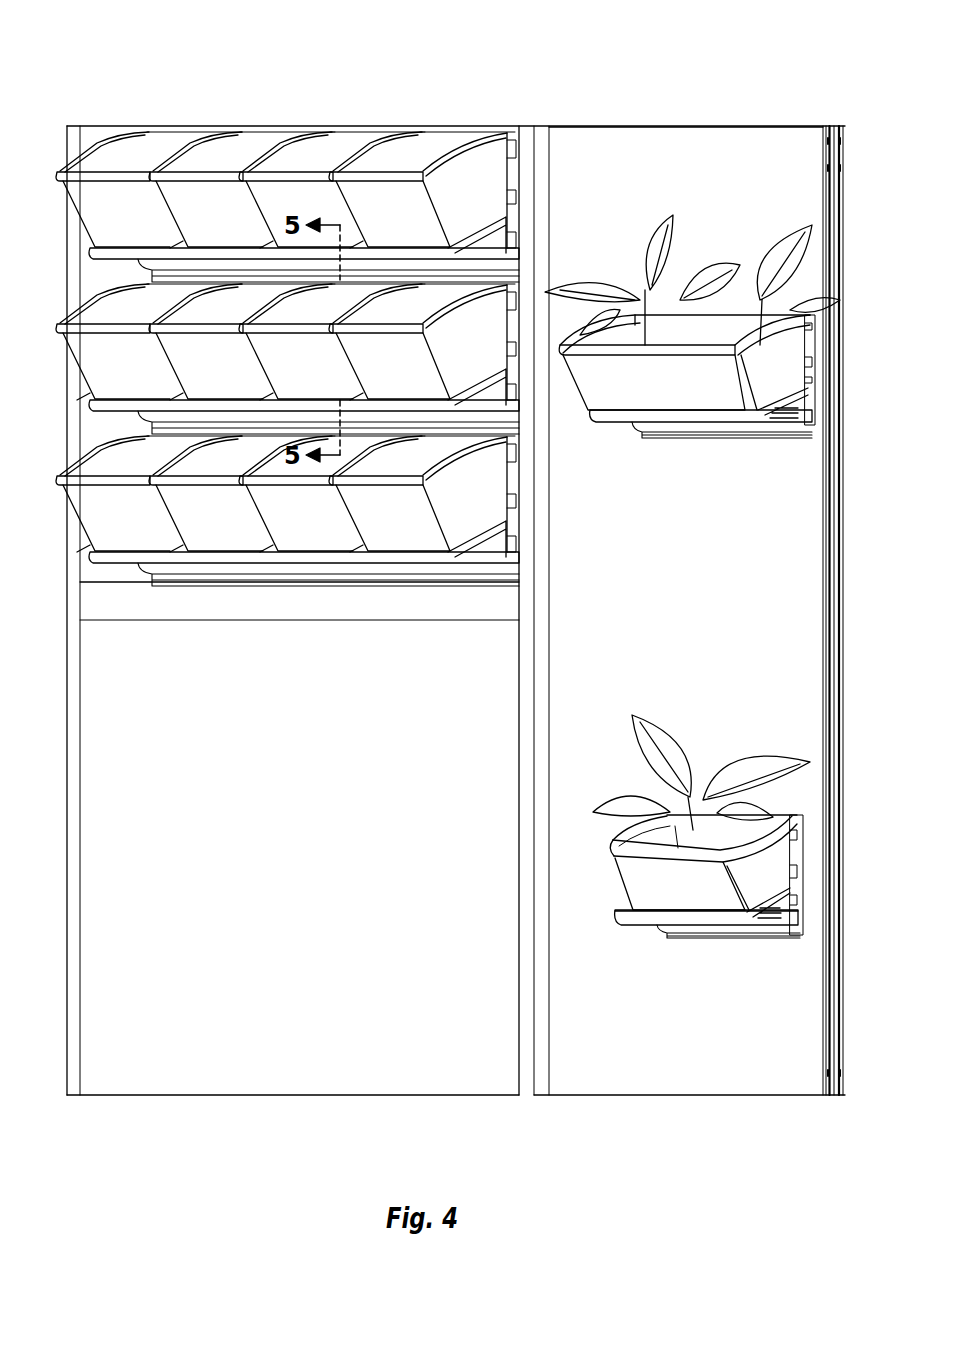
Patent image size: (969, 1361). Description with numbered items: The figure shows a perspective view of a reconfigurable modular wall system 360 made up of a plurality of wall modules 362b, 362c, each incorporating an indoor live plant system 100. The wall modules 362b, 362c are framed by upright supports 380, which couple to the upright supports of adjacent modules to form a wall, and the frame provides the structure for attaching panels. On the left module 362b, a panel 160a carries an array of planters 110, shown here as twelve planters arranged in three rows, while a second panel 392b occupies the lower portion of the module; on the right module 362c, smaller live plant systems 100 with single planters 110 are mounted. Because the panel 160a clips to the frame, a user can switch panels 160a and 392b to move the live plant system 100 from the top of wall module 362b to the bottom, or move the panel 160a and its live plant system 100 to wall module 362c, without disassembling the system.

The indoor live plant system 100 is at (322, 104).
The planter 110 is at (448, 534).
The panel 160a is at (98, 126).
The reconfigurable modular wall system 360 is at (772, 44).
The wall module 362b is at (210, 126).
The wall module 362c is at (612, 126).
The upright support 380 is at (72, 128).
The panel 392b is at (355, 1062).